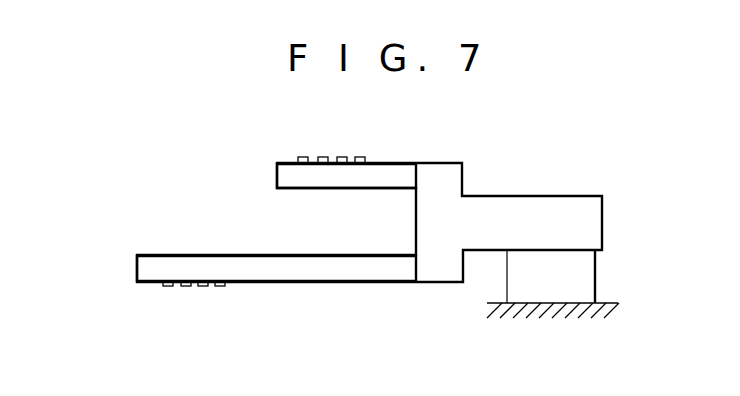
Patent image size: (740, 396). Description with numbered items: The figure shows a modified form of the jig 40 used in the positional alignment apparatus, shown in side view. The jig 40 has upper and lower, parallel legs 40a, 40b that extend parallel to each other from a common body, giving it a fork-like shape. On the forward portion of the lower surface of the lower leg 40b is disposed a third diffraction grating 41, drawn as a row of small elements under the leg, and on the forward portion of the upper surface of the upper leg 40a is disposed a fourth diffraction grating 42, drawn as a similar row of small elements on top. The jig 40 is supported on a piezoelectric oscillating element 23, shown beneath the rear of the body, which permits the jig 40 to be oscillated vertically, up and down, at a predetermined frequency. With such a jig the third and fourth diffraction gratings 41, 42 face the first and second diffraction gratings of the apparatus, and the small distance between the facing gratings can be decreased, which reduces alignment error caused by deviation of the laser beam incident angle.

The jig 40 is at (448, 185).
The upper leg 40a is at (277, 179).
The lower leg 40b is at (137, 264).
The third diffraction grating 41 is at (161, 287).
The fourth diffraction grating 42 is at (363, 157).
The piezoelectric oscillating element 23 is at (596, 292).